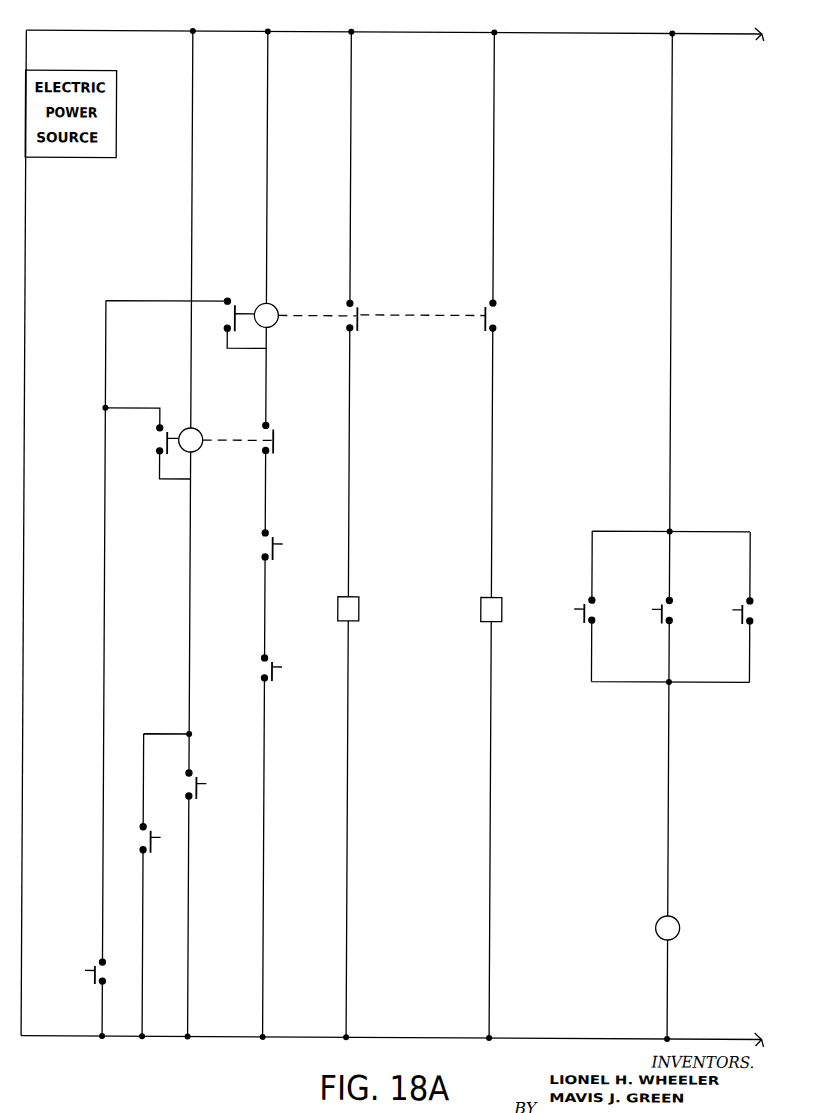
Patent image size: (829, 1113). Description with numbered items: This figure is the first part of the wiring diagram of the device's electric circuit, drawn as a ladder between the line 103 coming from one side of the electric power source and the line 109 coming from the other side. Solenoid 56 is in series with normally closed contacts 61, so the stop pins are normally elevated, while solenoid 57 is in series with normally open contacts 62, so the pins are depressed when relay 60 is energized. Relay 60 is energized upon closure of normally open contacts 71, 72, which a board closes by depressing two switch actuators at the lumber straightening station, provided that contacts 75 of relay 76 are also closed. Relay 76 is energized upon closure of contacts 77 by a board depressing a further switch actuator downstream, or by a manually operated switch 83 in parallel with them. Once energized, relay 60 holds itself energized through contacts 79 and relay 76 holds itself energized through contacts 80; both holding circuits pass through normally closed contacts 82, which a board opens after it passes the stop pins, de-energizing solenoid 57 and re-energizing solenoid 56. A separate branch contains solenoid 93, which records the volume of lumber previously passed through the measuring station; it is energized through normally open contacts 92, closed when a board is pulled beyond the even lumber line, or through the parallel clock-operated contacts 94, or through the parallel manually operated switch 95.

The line 103 is at (594, 33).
The line 109 is at (732, 1037).
The relay 60 is at (280, 316).
The normally open contacts 62 is at (360, 313).
The normally closed contacts 61 is at (500, 314).
The contacts 79 is at (236, 312).
The relay 76 is at (226, 431).
The contacts 80 is at (168, 434).
The contacts 75 is at (280, 450).
The normally open contacts 71 is at (279, 546).
The normally open contacts 72 is at (274, 676).
The solenoid 57 is at (362, 616).
The solenoid 56 is at (505, 616).
The manually operated switch 95 is at (612, 626).
The normally open contacts 92 is at (689, 626).
The contacts 94 is at (769, 626).
The contacts 77 is at (217, 778).
The switch 83 is at (149, 854).
The normally closed contacts 82 is at (97, 963).
The solenoid 93 is at (694, 918).